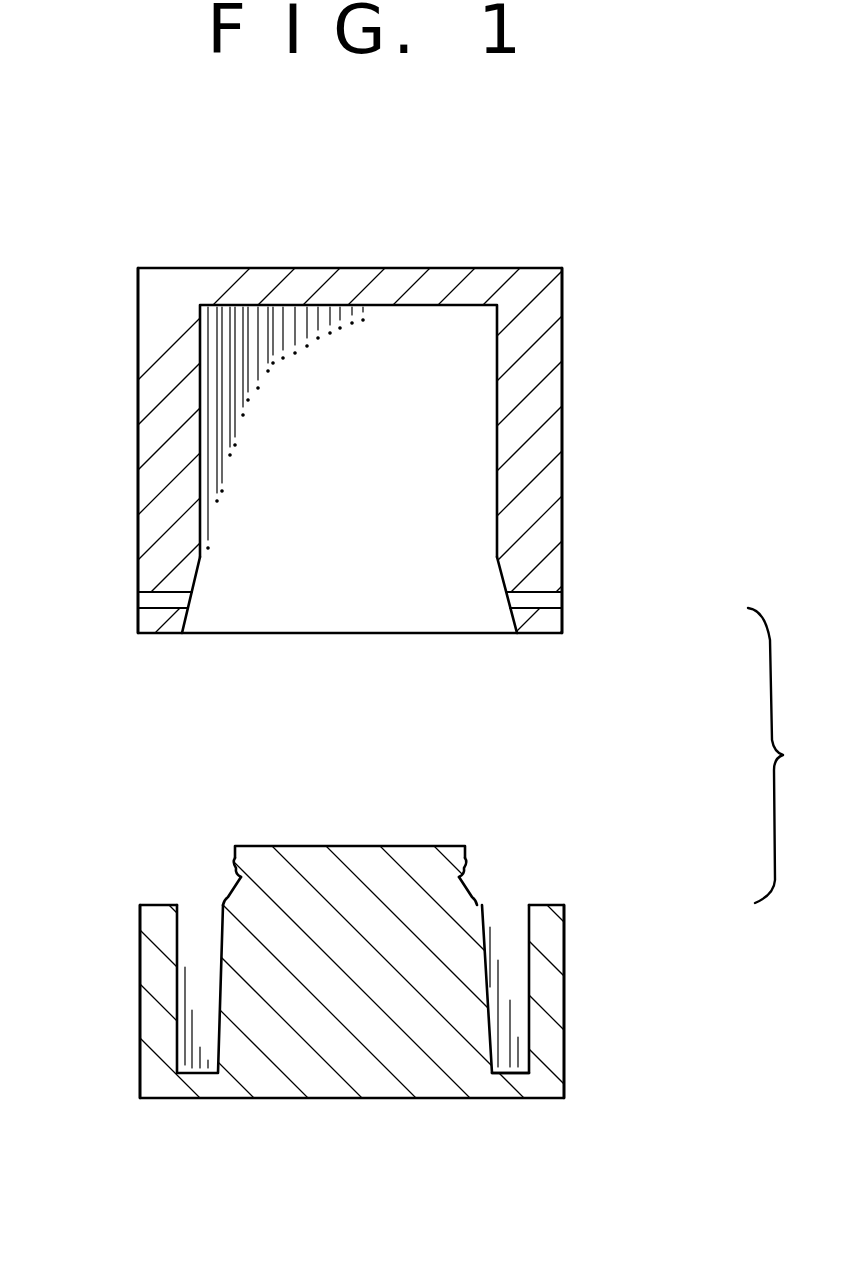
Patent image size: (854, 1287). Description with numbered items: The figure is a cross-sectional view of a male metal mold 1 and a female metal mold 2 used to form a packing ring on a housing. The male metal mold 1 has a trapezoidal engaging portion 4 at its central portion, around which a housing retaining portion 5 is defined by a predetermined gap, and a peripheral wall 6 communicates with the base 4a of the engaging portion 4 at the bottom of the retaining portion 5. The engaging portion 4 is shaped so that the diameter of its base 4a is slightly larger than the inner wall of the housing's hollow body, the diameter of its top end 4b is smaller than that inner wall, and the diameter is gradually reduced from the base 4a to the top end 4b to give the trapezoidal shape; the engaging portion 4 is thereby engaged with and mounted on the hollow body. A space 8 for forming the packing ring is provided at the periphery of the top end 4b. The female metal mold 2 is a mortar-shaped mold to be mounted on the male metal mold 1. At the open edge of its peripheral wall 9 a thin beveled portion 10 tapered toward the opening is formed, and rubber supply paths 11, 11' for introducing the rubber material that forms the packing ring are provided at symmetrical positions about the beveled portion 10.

The male metal mold 1 is at (379, 865).
The female metal mold 2 is at (427, 412).
The engaging portion 4 is at (387, 844).
The base 4a is at (502, 1072).
The top end 4b is at (358, 845).
The housing retaining portion 5 is at (193, 927).
The peripheral wall 6 is at (140, 1012).
The space for forming a packing ring 8 is at (237, 887).
The peripheral wall 9 is at (138, 443).
The beveled portion 10 is at (497, 570).
The rubber supply path 11 is at (589, 581).
The rubber supply path 11' is at (114, 590).